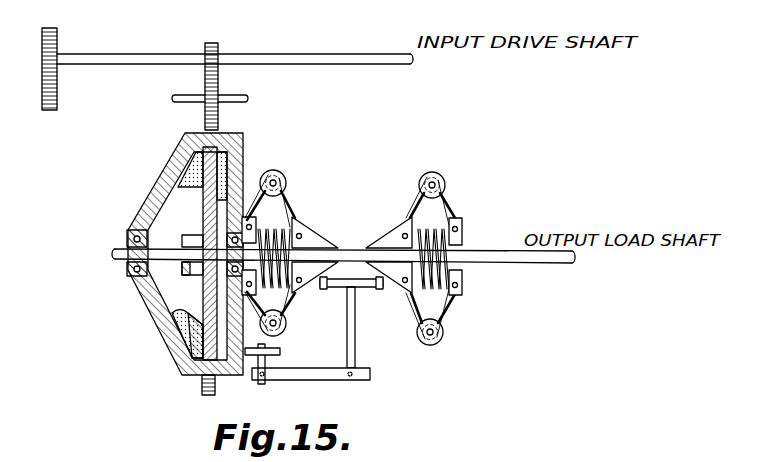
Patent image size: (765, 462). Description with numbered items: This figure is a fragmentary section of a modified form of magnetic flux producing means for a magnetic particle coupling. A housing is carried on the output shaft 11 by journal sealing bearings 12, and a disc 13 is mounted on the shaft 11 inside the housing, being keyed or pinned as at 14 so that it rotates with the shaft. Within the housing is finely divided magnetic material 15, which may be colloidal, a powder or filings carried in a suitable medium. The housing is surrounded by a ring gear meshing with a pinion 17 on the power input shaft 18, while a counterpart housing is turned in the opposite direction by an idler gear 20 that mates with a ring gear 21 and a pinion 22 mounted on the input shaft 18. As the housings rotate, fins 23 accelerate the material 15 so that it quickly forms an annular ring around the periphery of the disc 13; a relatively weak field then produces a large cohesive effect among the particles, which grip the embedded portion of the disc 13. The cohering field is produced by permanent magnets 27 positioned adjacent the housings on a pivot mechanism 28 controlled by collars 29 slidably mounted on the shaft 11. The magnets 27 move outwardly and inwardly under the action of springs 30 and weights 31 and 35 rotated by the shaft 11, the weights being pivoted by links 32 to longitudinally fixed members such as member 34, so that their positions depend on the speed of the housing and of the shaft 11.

The output shaft 11 is at (492, 266).
The journal sealing bearings 12 is at (128, 272).
The disc 13 is at (203, 213).
The pin 14 is at (182, 268).
The magnetic material 15 is at (137, 323).
The pinion 17 is at (58, 90).
The power input shaft 18 is at (133, 60).
The idler gear 20 is at (219, 87).
The ring gear 21 is at (219, 122).
The pinion 22 is at (220, 46).
The fins 23 is at (187, 165).
The permanent magnets 27 is at (280, 352).
The pivot mechanism 28 is at (325, 378).
The collars 29 is at (375, 240).
The springs 30 is at (322, 238).
The weights 31 is at (284, 177).
The links 32 is at (296, 203).
The longitudinally fixed member 34 is at (464, 296).
The weights 35 is at (442, 177).